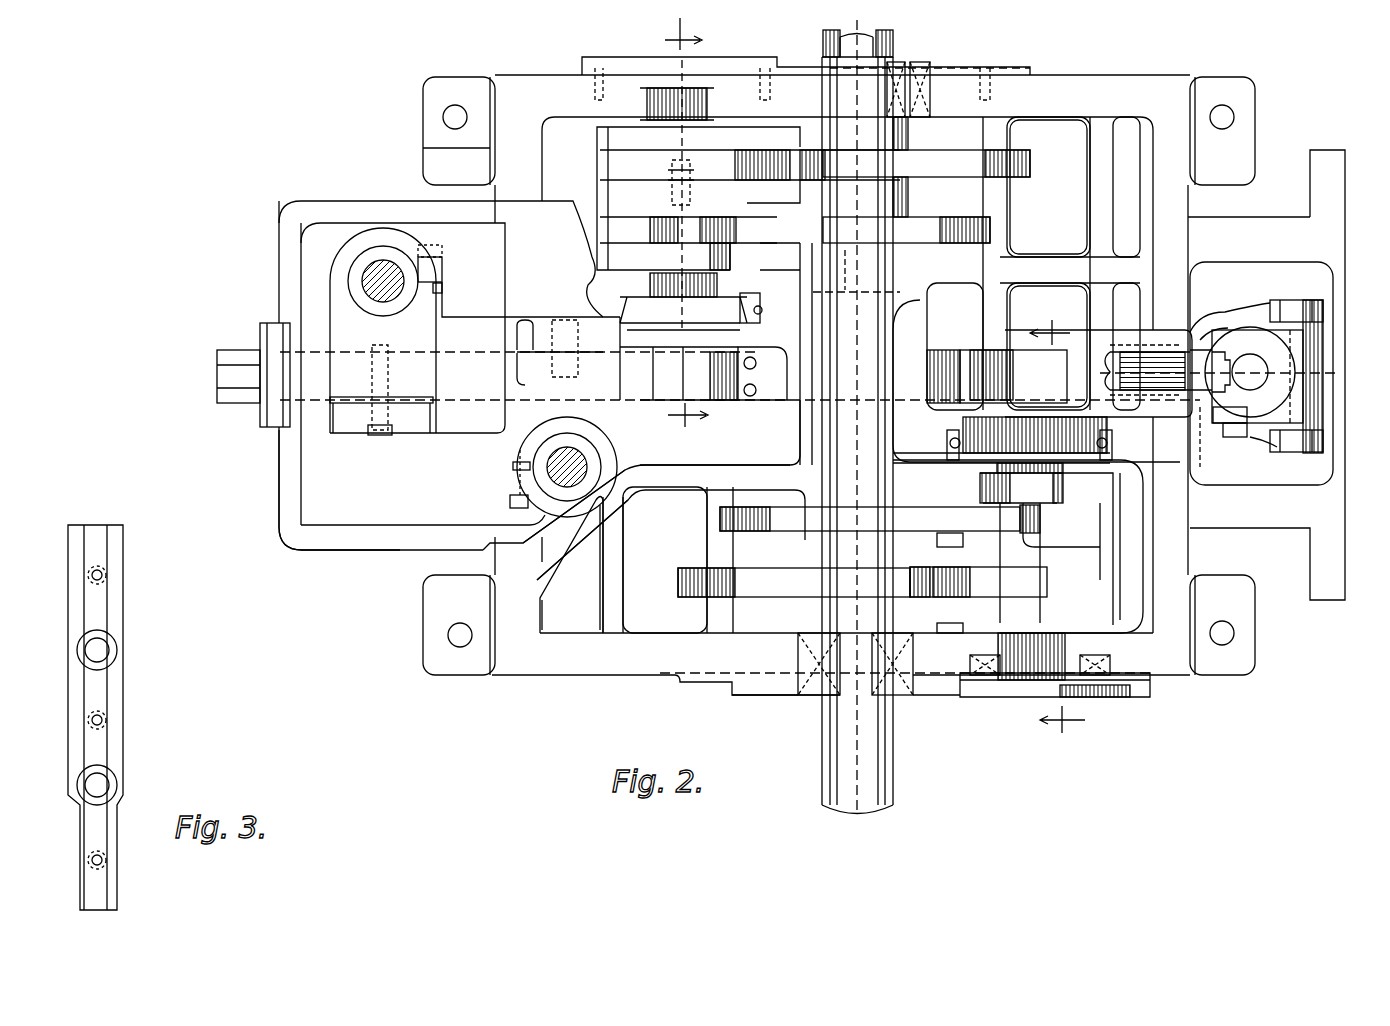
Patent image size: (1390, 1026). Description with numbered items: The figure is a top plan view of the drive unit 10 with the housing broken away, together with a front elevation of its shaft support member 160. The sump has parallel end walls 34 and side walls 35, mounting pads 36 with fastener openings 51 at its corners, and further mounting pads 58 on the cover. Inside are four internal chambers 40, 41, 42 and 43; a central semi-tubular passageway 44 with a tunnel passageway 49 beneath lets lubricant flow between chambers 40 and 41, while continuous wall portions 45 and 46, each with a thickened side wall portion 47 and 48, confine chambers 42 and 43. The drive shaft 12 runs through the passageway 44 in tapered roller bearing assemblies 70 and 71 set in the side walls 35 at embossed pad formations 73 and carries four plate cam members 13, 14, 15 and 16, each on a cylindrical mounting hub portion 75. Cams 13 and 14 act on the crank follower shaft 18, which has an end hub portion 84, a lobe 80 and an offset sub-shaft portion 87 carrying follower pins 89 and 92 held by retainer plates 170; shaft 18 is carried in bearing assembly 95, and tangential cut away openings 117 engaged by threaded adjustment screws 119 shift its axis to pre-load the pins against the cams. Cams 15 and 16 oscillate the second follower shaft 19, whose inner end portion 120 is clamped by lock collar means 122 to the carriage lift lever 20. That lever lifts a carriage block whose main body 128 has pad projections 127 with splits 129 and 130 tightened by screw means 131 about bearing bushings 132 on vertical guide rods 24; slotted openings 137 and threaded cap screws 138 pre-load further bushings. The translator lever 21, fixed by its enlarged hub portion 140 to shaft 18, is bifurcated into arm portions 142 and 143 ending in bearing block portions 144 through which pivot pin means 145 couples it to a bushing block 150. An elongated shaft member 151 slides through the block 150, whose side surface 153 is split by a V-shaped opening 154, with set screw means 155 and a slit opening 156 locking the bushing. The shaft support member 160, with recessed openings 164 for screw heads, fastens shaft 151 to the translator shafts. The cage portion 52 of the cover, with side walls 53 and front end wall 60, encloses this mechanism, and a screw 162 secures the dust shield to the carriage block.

In FIG. 2, the drive mechanism 10 is at (288, 133).
In FIG. 2, the input shaft 12 is at (905, 782).
In FIG. 2, the plate cam member 13 is at (753, 597).
In FIG. 2, the plate cam member 14 is at (762, 538).
In FIG. 2, the plate cam member 15 is at (944, 240).
In FIG. 2, the plate cam member 16 is at (942, 154).
In FIG. 2, the crank follower shaft 18 is at (1058, 692).
In FIG. 2, the crank follower shaft 19 is at (657, 40).
In FIG. 2, the carriage lift lever 20 is at (647, 413).
In FIG. 2, the translator lever 21 is at (1156, 324).
In FIG. 2, the guide rod 24 is at (365, 289).
In FIG. 2, the end wall 34 is at (425, 150).
In FIG. 2, the side wall 35 is at (1135, 75).
In FIG. 2, the mounting pad 36 is at (440, 77).
In FIG. 2, the internal chamber 40 is at (1078, 192).
In FIG. 2, the internal chamber 41 is at (662, 602).
In FIG. 2, the internal chamber 42 is at (1061, 317).
In FIG. 2, the internal chamber 43 is at (748, 456).
In FIG. 2, the central semi-tubular passageway 44 is at (893, 330).
In FIG. 2, the continuous wall portion 45 is at (1058, 252).
In FIG. 2, the continuous wall portion 46 is at (684, 500).
In FIG. 2, the thickened side wall portion 47 is at (950, 460).
In FIG. 2, the thickened side wall portion 48 is at (780, 257).
In FIG. 2, the tunnel passageway 49 is at (862, 270).
In FIG. 2, the opening 51 is at (455, 117).
In FIG. 2, the cage portion 52 is at (327, 560).
In FIG. 2, the side wall 53 is at (548, 215).
In FIG. 2, the mounting pad 58 is at (1280, 518).
In FIG. 2, the front end wall 60 is at (282, 490).
In FIG. 2, the tapered roller bearing assembly 70 is at (808, 697).
In FIG. 2, the tapered roller bearing assembly 71 is at (950, 62).
In FIG. 2, the embossed pad formation 73 is at (745, 700).
In FIG. 2, the cylindrical mounting hub portion 75 is at (905, 130).
In FIG. 2, the lobe 80 is at (1100, 489).
In FIG. 2, the end hub portion 84 is at (1020, 672).
In FIG. 2, the offset sub-shaft portion 87 is at (590, 160).
In FIG. 2, the follower pin 89 is at (740, 162).
In FIG. 2, the follower pin 92 is at (1050, 537).
In FIG. 2, the bearing assembly 95 is at (1134, 707).
In FIG. 2, the tangential cut away opening 117 is at (742, 306).
In FIG. 2, the threaded adjustment screw 119 is at (762, 306).
In FIG. 2, the inner end portion 120 is at (722, 400).
In FIG. 2, the lock collar means 122 is at (775, 350).
In FIG. 2, the pad projection 127 is at (444, 270).
In FIG. 2, the main body 128 is at (452, 427).
In FIG. 2, the split 129 is at (513, 466).
In FIG. 2, the split 130 is at (443, 290).
In FIG. 2, the screw means 131 is at (444, 252).
In FIG. 2, the bearing bushing 132 is at (372, 262).
In FIG. 2, the slotted opening 137 is at (533, 350).
In FIG. 2, the threaded cap screw 138 is at (380, 355).
In FIG. 2, the enlarged hub portion 140 is at (1015, 375).
In FIG. 2, the arm portion 142 is at (1180, 330).
In FIG. 2, the arm portion 143 is at (1178, 417).
In FIG. 2, the bearing block portion 144 is at (1323, 306).
In FIG. 2, the pivot pin means 145 is at (1326, 406).
In FIG. 2, the bushing block 150 is at (1325, 356).
In FIG. 2, the elongated shaft member 151 is at (1252, 365).
In FIG. 2, the side surface 153 is at (1220, 352).
In FIG. 2, the V-shaped opening 154 is at (1232, 360).
In FIG. 2, the set screw means 155 is at (1250, 440).
In FIG. 2, the slit opening 156 is at (1238, 440).
In FIG. 2, the shaft support member 160 is at (1195, 295).
In FIG. 3, the shaft support member 160 is at (137, 566).
In FIG. 2, the screw 162 is at (1220, 425).
In FIG. 3, the recessed opening 164 is at (113, 650).
In FIG. 2, the retainer plate 170 is at (676, 178).